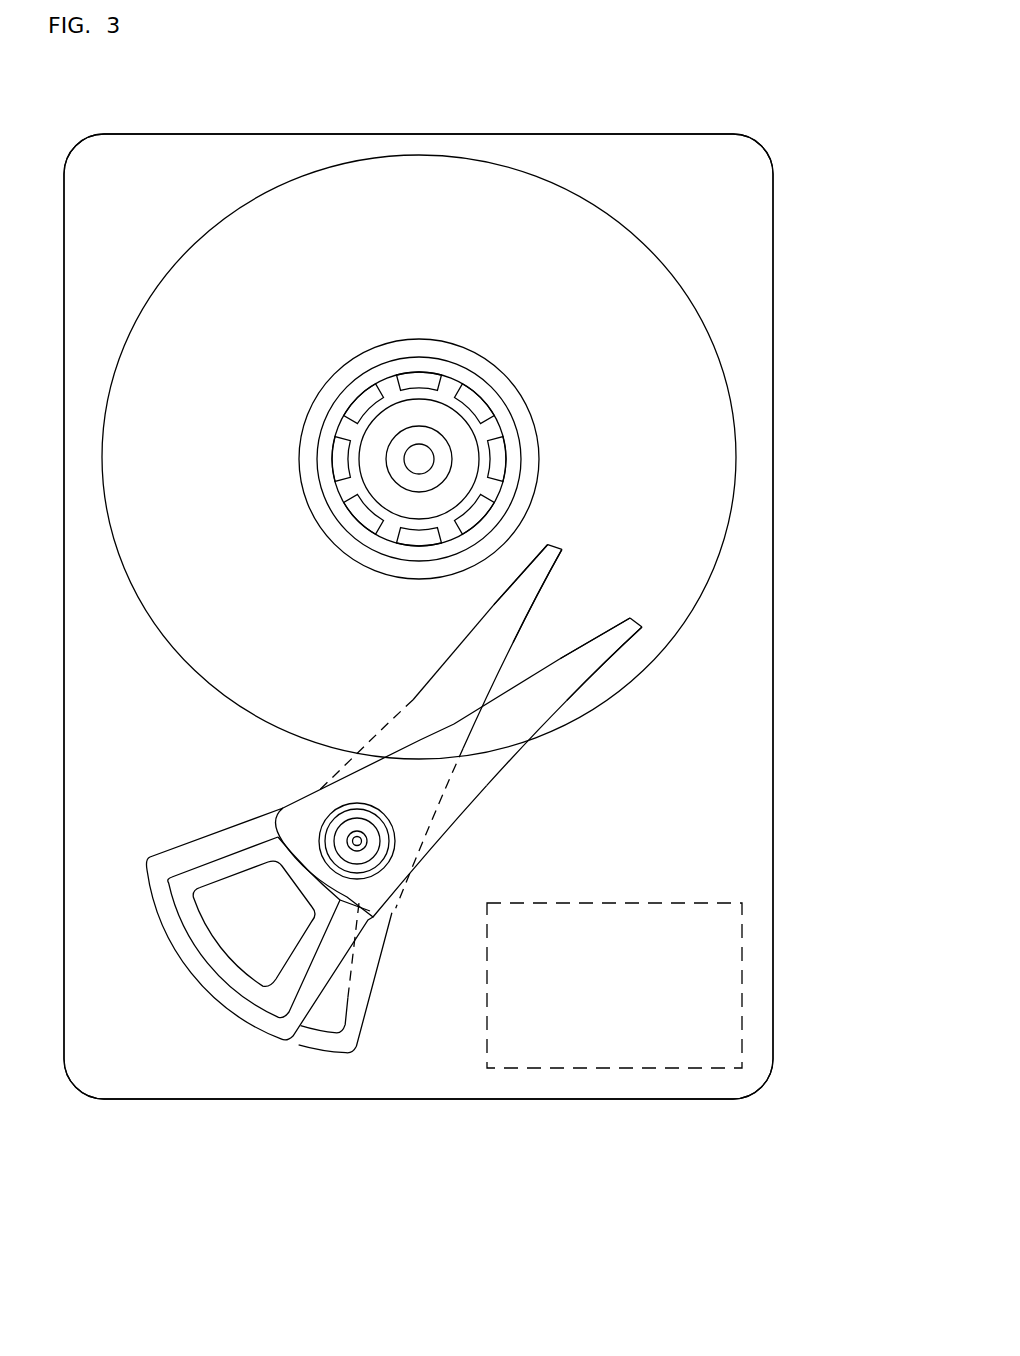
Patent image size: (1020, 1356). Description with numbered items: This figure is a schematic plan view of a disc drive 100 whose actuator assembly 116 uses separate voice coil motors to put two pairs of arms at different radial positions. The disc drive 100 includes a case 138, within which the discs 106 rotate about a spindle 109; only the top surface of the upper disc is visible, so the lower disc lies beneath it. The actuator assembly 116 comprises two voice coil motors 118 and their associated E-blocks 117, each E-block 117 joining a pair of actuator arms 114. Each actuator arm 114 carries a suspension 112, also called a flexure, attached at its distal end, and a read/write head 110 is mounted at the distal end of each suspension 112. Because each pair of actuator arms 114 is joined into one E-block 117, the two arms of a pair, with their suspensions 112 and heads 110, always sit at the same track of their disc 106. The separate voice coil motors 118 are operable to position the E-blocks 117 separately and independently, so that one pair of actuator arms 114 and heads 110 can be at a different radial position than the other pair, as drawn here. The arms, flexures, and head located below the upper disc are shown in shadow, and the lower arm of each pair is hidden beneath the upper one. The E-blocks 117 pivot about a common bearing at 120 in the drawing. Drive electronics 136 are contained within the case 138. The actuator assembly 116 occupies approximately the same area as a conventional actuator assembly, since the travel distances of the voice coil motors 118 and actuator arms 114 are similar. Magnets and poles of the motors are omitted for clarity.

The disc drive 100 is at (146, 1125).
The discs 106 is at (460, 232).
The spindle 109 is at (453, 460).
The read/write heads 110 is at (553, 543).
The suspensions 112 is at (538, 597).
The actuator arms 114 is at (427, 685).
The actuator assembly 116 is at (225, 780).
The E-blocks 117 is at (373, 737).
The voice coil motors 118 is at (200, 838).
The pivot bearing 120 is at (363, 845).
The drive electronics 136 is at (653, 897).
The case 138 is at (640, 1099).